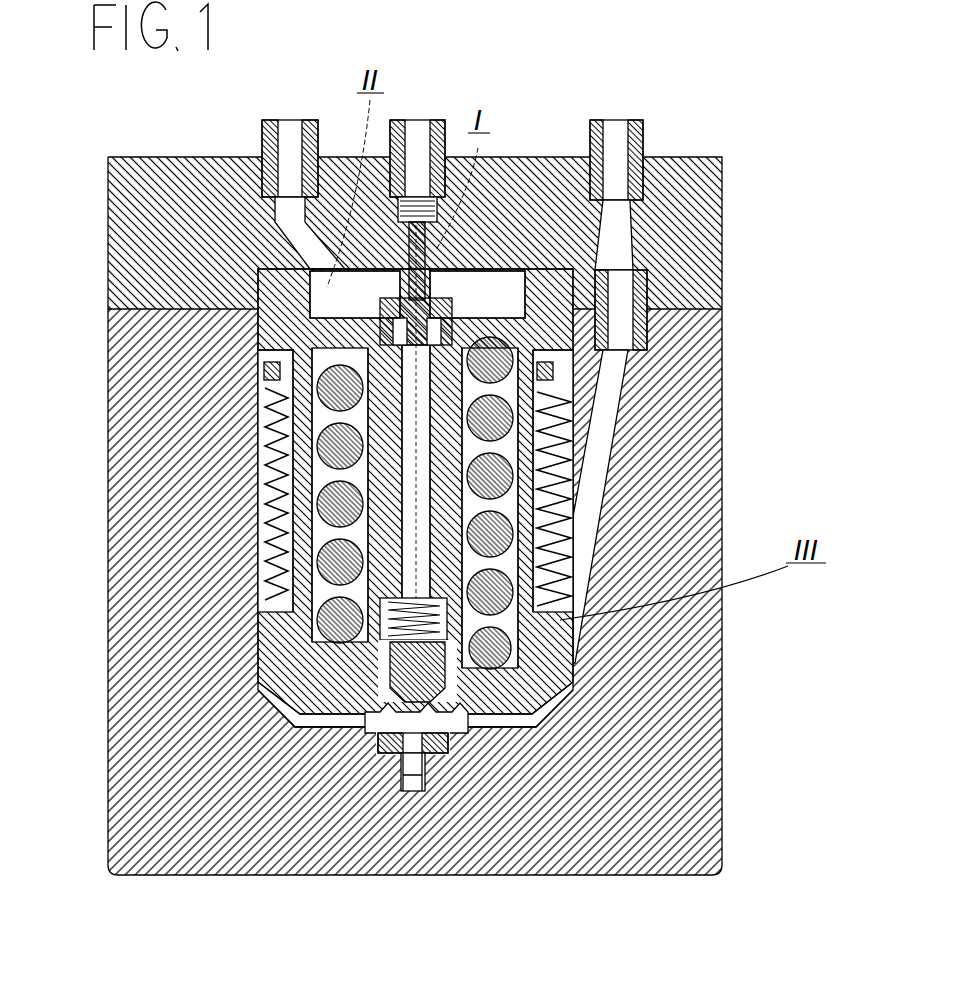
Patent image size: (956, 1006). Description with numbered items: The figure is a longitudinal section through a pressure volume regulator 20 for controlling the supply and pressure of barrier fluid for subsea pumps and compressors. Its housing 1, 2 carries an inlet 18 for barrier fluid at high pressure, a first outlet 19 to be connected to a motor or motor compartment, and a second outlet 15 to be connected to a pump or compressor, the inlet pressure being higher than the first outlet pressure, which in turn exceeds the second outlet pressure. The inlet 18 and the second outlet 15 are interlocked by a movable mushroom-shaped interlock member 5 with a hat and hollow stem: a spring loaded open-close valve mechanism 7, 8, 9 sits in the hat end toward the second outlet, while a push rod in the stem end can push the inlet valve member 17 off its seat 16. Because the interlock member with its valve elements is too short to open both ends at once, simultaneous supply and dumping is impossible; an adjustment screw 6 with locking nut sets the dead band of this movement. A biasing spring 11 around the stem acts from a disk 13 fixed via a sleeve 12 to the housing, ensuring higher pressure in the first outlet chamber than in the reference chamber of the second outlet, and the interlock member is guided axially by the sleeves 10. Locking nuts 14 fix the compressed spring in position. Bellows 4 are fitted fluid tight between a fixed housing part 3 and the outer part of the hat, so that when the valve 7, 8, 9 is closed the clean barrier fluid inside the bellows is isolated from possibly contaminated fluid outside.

The regulator housing 1 is at (135, 235).
The regulator housing 2 is at (145, 345).
The fixed part of the regulator housing 3 is at (255, 388).
The bellows 4 is at (262, 560).
The interlock member 5 is at (262, 705).
The adjustment screw 6 is at (418, 795).
The valve element 7 is at (420, 712).
The valve element 8 is at (433, 707).
The valve element 9 is at (537, 700).
The sleeves 10 is at (575, 700).
The biasing spring 11 is at (600, 720).
The sleeve 12 is at (560, 500).
The disk 13 is at (605, 372).
The locking nuts 14 is at (625, 288).
The second outlet 15 is at (617, 128).
The seat 16 is at (452, 300).
The valve member 17 is at (440, 252).
The inlet 18 is at (413, 132).
The first outlet 19 is at (285, 132).
The pressure volume regulator 20 is at (150, 158).